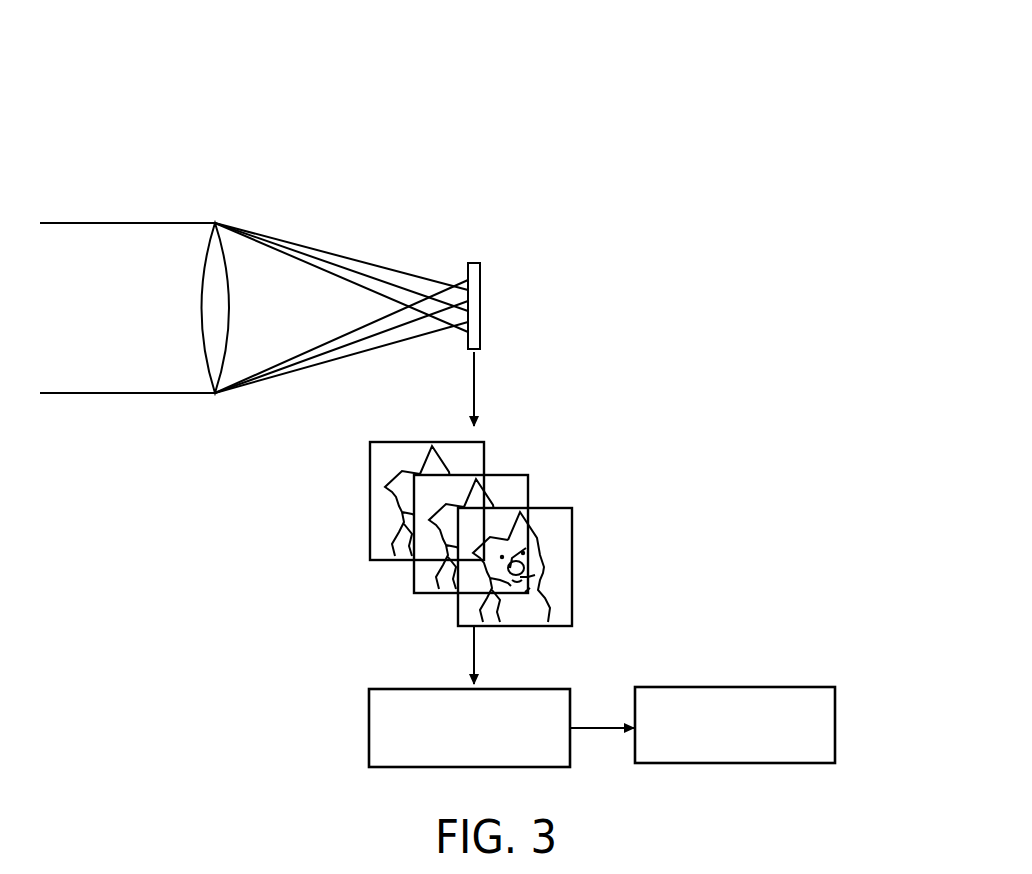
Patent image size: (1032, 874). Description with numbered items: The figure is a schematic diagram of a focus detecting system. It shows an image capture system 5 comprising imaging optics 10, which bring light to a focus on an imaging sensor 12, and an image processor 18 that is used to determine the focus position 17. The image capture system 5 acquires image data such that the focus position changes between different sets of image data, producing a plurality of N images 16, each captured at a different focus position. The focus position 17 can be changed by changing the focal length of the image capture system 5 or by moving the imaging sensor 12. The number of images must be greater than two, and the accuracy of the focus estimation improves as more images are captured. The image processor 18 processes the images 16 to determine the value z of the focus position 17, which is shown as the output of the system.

The image capture system 5 is at (360, 120).
The imaging optics 10 is at (197, 260).
The imaging sensor 12 is at (482, 290).
The images 16 is at (528, 497).
The focus position 17 is at (835, 722).
The image processor 18 is at (570, 692).